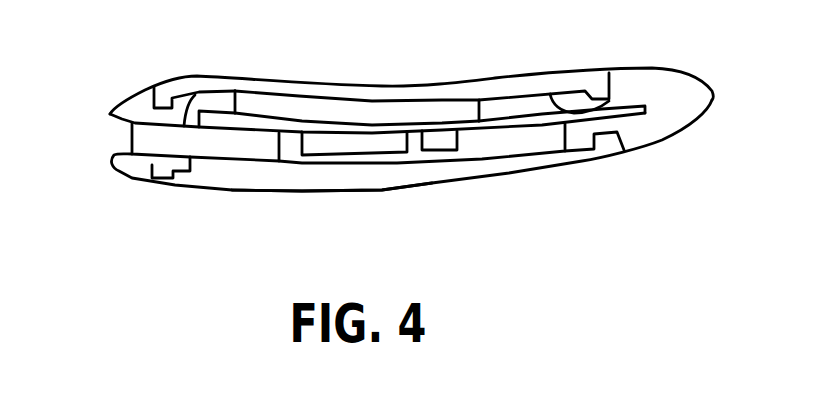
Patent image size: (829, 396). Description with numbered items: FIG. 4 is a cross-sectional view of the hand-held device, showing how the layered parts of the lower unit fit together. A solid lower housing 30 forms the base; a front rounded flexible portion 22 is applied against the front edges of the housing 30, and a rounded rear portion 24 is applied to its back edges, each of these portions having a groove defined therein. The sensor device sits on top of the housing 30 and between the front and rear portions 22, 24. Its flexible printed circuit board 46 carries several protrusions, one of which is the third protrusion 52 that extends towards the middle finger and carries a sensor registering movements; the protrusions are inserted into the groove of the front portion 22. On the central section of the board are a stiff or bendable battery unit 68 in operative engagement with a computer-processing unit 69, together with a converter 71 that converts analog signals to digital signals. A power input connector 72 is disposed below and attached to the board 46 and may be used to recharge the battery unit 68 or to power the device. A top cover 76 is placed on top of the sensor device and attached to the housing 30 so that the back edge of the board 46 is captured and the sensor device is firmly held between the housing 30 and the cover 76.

The front rounded flexible portion 22 is at (686, 88).
The rounded rear portion 24 is at (382, 174).
The lower housing 30 is at (218, 178).
The flexible printed circuit board 46 is at (517, 110).
The third protrusion 52 is at (628, 103).
The battery unit 68 is at (358, 108).
The computer-processing unit 69 is at (353, 137).
The converter 71 is at (443, 135).
The power input connector 72 is at (150, 137).
The top cover 76 is at (207, 88).